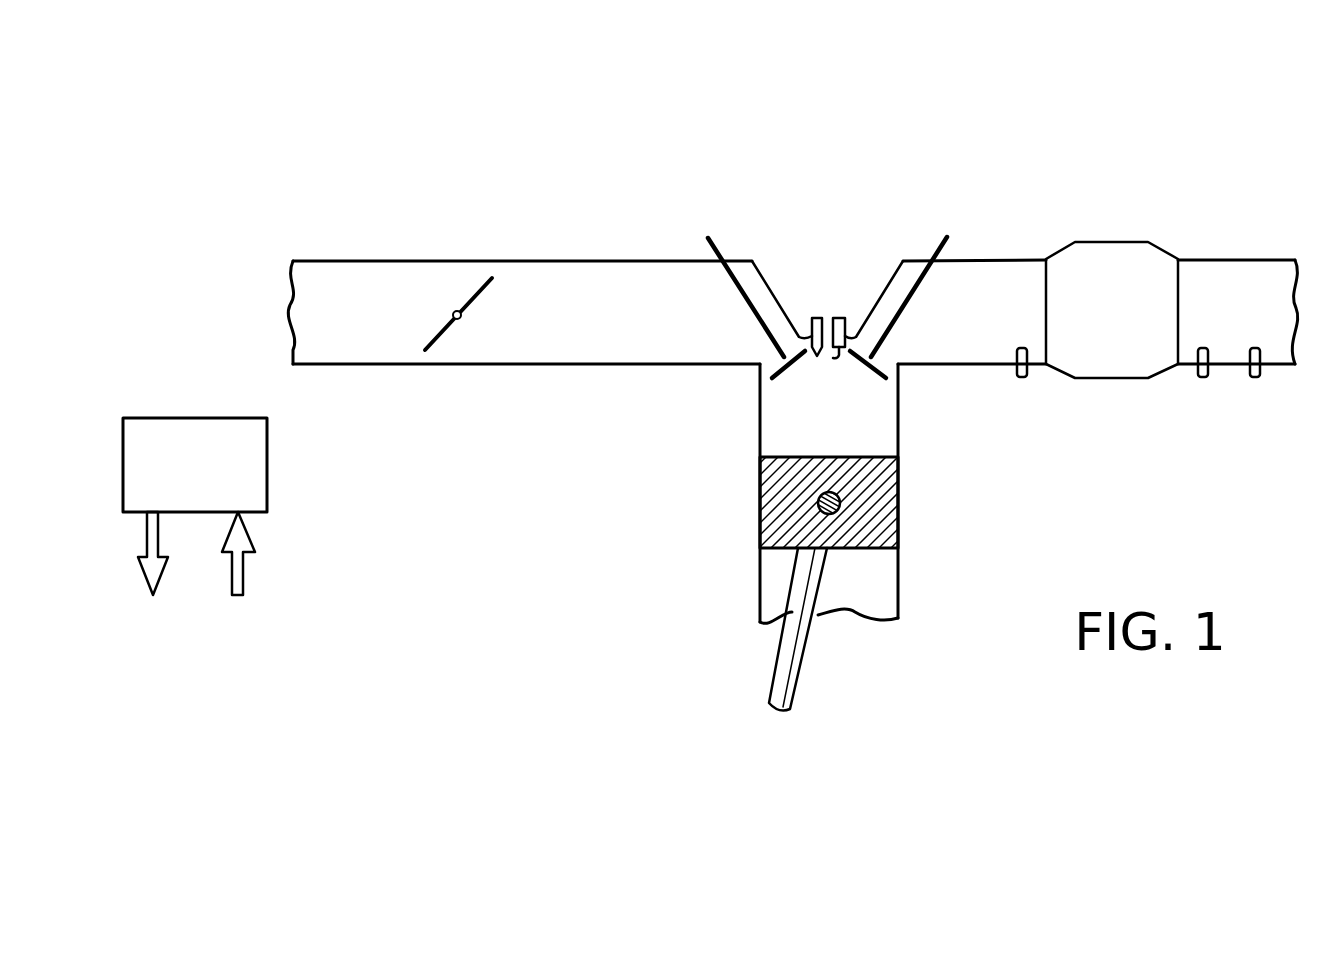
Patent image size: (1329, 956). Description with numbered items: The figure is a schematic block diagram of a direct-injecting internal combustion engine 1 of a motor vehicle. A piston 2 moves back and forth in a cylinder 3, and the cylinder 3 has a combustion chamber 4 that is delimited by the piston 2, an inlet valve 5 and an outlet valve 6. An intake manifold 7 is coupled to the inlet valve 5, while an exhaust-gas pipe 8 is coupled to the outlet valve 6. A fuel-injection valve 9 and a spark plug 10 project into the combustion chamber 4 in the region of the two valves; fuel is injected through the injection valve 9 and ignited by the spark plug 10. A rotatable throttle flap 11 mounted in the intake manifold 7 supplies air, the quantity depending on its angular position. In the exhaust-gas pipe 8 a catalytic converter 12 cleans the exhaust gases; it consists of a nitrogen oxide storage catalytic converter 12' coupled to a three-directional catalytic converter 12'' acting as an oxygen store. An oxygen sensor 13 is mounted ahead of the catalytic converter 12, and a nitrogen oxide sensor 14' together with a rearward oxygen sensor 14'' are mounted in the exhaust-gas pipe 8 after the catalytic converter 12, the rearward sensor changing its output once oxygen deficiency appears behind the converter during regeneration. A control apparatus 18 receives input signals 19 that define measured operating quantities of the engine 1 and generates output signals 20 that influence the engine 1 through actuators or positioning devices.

The internal combustion engine 1 is at (638, 492).
The piston 2 is at (885, 510).
The cylinder 3 is at (898, 422).
The combustion chamber 4 is at (787, 428).
The inlet valve 5 is at (742, 268).
The outlet valve 6 is at (913, 268).
The intake manifold 7 is at (590, 356).
The exhaust-gas pipe 8 is at (992, 356).
The fuel-injection valve 9 is at (809, 334).
The spark plug 10 is at (848, 335).
The throttle flap 11 is at (438, 333).
The catalytic converter 12 is at (1112, 310).
The nitrogen oxide storage catalytic converter 12' is at (1073, 249).
The 3-directional catalytic converter 12'' is at (1152, 249).
The oxygen sensor 13 is at (1022, 378).
The nitrogen oxide sensor 14' is at (1184, 409).
The rearward oxygen sensor 14'' is at (1277, 409).
The control apparatus 18 is at (198, 433).
The input signals 19 is at (238, 577).
The output signals 20 is at (157, 532).